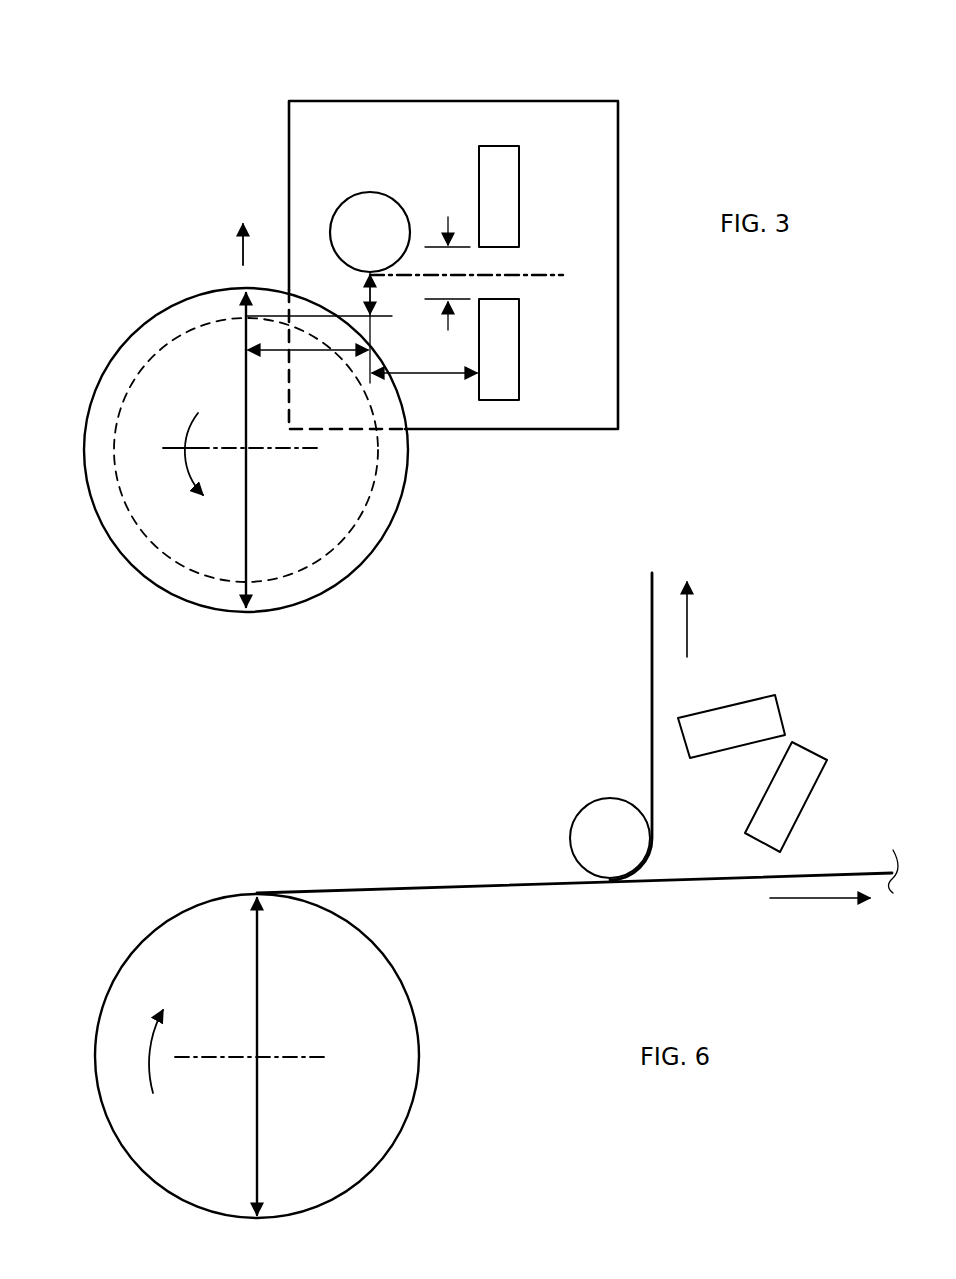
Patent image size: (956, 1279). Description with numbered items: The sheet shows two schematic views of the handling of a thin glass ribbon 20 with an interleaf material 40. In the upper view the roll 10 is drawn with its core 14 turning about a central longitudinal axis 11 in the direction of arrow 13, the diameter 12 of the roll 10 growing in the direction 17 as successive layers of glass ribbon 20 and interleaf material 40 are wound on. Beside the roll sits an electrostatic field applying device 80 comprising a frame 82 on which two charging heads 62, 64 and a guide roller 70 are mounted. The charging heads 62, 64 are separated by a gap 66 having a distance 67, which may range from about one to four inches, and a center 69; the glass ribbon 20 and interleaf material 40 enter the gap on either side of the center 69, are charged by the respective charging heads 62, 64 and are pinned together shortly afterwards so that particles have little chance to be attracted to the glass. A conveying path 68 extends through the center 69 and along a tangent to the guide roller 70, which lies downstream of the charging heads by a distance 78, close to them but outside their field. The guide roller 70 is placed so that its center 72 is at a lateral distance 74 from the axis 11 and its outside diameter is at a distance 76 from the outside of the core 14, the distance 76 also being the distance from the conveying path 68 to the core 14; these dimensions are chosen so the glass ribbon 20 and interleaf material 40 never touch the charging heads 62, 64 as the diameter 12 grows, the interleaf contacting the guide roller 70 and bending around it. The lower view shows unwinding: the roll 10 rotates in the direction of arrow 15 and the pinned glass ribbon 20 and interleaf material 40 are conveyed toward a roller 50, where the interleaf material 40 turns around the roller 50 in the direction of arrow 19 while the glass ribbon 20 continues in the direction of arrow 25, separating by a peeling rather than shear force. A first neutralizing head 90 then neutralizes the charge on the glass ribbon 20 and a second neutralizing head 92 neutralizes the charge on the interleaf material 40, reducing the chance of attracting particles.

In FIG. 3, the roll 10 is at (372, 555).
In FIG. 6, the roll 10 is at (424, 1031).
In FIG. 3, the central longitudinal axis 11 is at (244, 446).
In FIG. 6, the central longitudinal axis 11 is at (253, 1053).
In FIG. 3, the diameter 12 is at (246, 565).
In FIG. 6, the diameter 12 is at (257, 1118).
In FIG. 3, the arrow 13 is at (197, 473).
In FIG. 3, the core 14 is at (312, 566).
In FIG. 6, the arrow 15 is at (143, 1052).
In FIG. 3, the direction 17 is at (243, 250).
In FIG. 6, the arrow 19 is at (687, 608).
In FIG. 6, the glass ribbon 20 is at (675, 882).
In FIG. 6, the arrow 25 is at (823, 898).
In FIG. 6, the interleaf material 40 is at (652, 670).
In FIG. 6, the roller 50 is at (600, 827).
In FIG. 3, the charging head 62 is at (493, 360).
In FIG. 3, the charging head 64 is at (493, 168).
In FIG. 3, the gap 66 is at (505, 258).
In FIG. 3, the distance 67 is at (445, 225).
In FIG. 3, the conveying path 68 is at (543, 277).
In FIG. 3, the center 69 is at (500, 279).
In FIG. 3, the guide roller 70 is at (368, 212).
In FIG. 3, the center 72 is at (368, 237).
In FIG. 3, the lateral distance 74 is at (368, 313).
In FIG. 3, the distance 76 is at (303, 350).
In FIG. 3, the distance 78 is at (445, 375).
In FIG. 3, the electrostatic field applying device 80 is at (687, 114).
In FIG. 3, the frame 82 is at (583, 99).
In FIG. 6, the first neutralizing head 90 is at (800, 770).
In FIG. 6, the second neutralizing head 92 is at (732, 723).